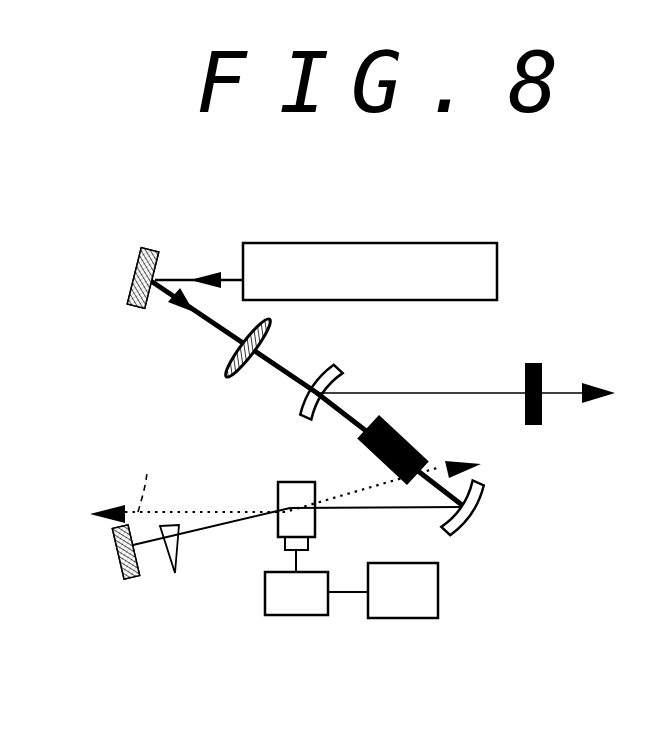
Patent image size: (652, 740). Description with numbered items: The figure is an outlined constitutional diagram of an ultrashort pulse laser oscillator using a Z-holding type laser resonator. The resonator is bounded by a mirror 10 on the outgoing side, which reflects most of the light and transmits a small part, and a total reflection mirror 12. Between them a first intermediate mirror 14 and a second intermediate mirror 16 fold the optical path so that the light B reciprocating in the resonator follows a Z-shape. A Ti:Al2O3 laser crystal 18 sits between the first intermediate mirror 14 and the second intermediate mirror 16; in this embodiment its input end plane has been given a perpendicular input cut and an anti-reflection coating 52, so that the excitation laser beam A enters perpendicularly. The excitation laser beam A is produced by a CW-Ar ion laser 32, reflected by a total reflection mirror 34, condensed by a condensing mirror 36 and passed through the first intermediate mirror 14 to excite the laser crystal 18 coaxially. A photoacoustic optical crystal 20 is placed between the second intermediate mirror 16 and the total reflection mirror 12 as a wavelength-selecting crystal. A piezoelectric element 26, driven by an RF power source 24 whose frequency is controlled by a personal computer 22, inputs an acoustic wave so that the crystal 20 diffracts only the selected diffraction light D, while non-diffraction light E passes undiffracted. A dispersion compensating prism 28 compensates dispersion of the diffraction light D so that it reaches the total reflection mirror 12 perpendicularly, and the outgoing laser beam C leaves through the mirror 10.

The mirror on outgoing side 10 is at (545, 368).
The total reflection mirror 12 is at (114, 572).
The first intermediate mirror 14 is at (344, 377).
The second intermediate mirror 16 is at (484, 492).
The Ti:Al2O3 laser crystal 18 is at (396, 413).
The photoacoustic optical crystal 20 is at (278, 493).
The personal computer 22 is at (440, 609).
The RF power source 24 is at (292, 616).
The piezoelectric element 26 is at (308, 543).
The dispersion compensating prism 28 is at (180, 552).
The CW-Ar ion laser 32 is at (497, 262).
The total reflection mirror 34 is at (133, 306).
The condensing mirror 36 is at (272, 322).
The anti-reflection coating 52 is at (385, 467).
The excitation laser beam A is at (176, 279).
The light reciprocating in the laser resonator B is at (417, 393).
The outgoing laser beam C is at (563, 396).
The diffraction light D is at (237, 527).
The non-diffraction light E is at (154, 483).